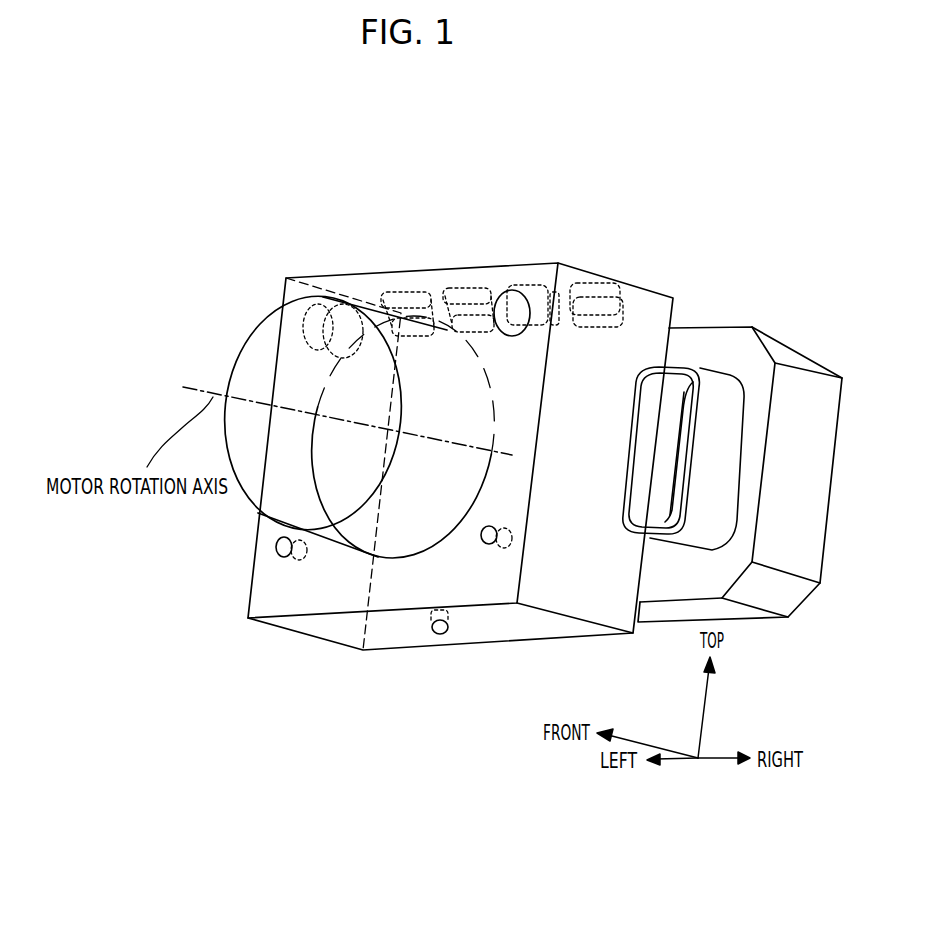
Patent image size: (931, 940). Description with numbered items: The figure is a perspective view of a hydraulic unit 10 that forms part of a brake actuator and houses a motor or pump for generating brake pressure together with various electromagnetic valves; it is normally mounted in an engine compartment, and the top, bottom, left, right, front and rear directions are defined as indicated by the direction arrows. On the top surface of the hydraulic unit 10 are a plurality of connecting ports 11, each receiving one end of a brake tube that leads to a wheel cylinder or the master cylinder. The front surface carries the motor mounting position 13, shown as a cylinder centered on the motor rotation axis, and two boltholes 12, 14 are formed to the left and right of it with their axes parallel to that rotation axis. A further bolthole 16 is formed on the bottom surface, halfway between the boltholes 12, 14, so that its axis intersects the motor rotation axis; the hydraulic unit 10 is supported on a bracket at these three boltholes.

The hydraulic unit 10 is at (375, 268).
The connecting ports 11 is at (310, 300).
The bolthole 12 is at (275, 548).
The motor mounting position 13 is at (256, 368).
The bolthole 14 is at (482, 538).
The bolthole 16 is at (440, 634).